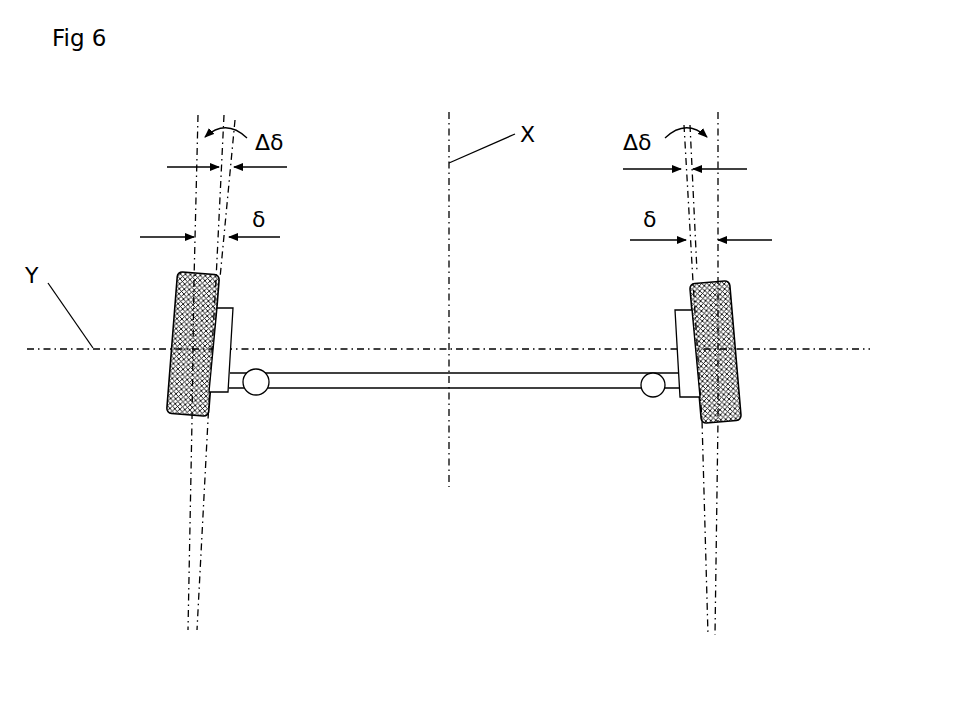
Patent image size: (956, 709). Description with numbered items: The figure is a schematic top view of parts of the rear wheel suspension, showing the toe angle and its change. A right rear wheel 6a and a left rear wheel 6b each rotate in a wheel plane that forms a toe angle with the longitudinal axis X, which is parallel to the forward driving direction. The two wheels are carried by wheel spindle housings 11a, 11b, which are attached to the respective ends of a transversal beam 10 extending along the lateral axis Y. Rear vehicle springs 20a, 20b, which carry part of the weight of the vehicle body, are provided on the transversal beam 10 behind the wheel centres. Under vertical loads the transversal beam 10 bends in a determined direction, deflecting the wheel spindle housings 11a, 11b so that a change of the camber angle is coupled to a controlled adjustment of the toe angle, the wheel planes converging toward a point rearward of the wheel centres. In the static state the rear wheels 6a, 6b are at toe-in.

The right rear wheel 6a is at (732, 393).
The left rear wheel 6b is at (172, 378).
The transversal beam 10 is at (373, 378).
The wheel spindle housing 11a is at (683, 327).
The wheel spindle housing 11b is at (218, 327).
The rear vehicle spring 20a is at (650, 397).
The rear vehicle spring 20b is at (259, 395).